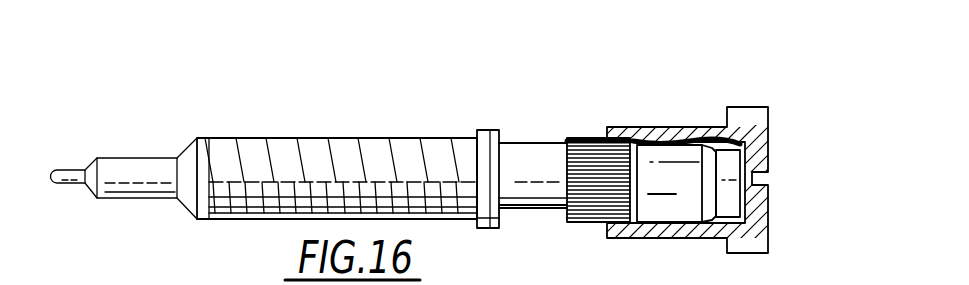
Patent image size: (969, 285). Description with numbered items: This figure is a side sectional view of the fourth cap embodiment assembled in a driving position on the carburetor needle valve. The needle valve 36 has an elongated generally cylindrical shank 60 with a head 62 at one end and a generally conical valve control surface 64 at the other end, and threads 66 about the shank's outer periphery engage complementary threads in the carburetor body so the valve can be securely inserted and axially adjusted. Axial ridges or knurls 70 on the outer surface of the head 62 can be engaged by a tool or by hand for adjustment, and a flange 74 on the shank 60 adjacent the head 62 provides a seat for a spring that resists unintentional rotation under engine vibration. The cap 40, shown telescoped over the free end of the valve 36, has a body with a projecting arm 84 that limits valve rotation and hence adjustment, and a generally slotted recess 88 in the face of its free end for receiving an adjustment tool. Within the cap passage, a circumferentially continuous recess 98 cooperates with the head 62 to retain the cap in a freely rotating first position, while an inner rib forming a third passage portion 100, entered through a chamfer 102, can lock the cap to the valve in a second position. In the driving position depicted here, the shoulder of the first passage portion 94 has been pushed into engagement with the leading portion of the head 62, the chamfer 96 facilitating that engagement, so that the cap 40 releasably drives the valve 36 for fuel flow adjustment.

The needle valve 36 is at (303, 123).
The cap 40 is at (812, 90).
The shank 60 is at (380, 148).
The head 62 is at (580, 138).
The valve control surface 64 is at (67, 160).
The threads 66 is at (215, 218).
The knurls 70 is at (582, 219).
The flange 74 is at (490, 229).
The arm 84 is at (750, 113).
The slotted recess 88 is at (753, 178).
The first passage portion 94 is at (647, 140).
The chamfer 96 is at (598, 138).
The recess 98 is at (669, 183).
The third passage portion 100 is at (717, 140).
The chamfer 102 is at (688, 140).